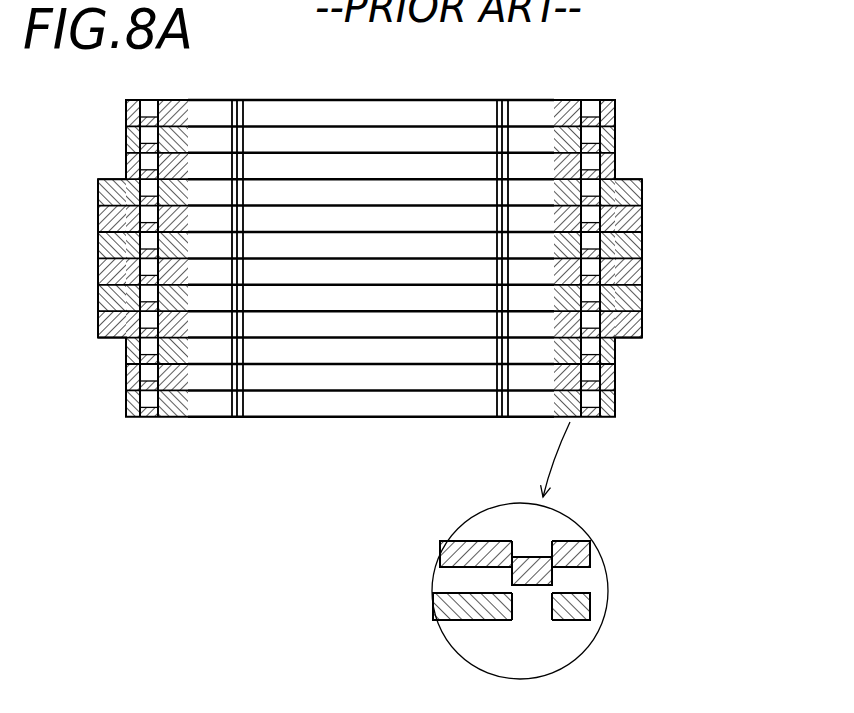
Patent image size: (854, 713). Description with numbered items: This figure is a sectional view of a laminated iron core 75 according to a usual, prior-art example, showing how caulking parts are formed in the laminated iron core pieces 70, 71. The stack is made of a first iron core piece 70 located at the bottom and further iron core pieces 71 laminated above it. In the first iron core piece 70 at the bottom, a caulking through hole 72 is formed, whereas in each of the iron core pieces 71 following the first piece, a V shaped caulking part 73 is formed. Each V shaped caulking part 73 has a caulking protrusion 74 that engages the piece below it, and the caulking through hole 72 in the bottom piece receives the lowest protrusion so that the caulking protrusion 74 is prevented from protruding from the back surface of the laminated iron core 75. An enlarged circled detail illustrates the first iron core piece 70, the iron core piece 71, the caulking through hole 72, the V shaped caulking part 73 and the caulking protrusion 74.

The first iron core piece 70 is at (609, 403).
The iron core piece 71 is at (633, 300).
The caulking through hole 72 is at (533, 613).
The V shaped caulking part 73 is at (530, 546).
The caulking protrusion 74 is at (513, 577).
The laminated iron core 75 is at (643, 95).